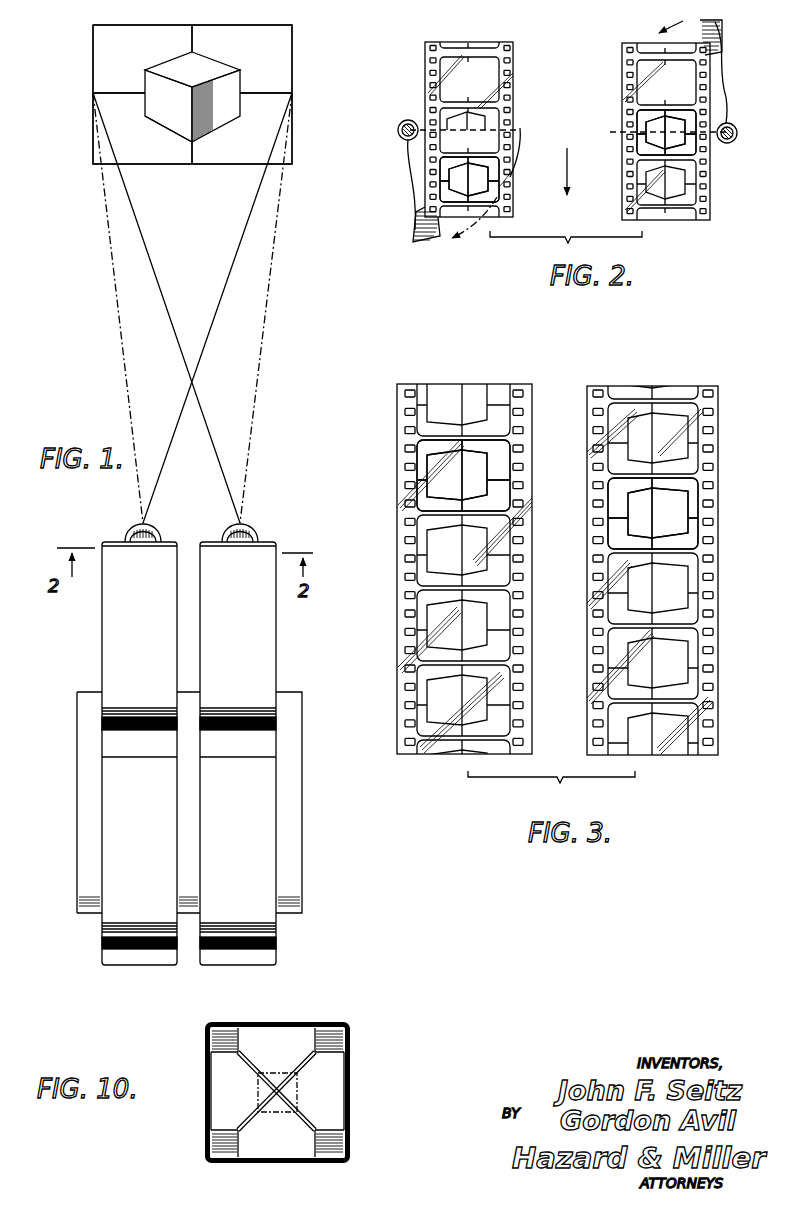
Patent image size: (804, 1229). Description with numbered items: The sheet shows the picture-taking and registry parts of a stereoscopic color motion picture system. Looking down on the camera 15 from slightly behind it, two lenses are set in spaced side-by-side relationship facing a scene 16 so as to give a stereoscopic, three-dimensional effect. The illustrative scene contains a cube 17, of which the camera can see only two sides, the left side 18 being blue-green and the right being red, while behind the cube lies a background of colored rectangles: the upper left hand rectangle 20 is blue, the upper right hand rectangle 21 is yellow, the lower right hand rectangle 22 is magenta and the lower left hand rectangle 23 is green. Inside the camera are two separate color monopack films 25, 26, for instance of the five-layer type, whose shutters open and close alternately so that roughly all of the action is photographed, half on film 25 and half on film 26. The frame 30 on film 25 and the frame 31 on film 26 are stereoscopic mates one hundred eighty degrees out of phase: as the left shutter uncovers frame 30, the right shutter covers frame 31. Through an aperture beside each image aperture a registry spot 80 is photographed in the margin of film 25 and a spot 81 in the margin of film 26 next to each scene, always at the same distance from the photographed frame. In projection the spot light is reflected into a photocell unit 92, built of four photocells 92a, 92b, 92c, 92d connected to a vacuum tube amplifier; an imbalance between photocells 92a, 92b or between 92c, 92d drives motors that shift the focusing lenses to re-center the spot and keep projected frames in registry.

In FIG. 1, the camera 15 is at (280, 647).
In FIG. 1, the scene 16 is at (294, 110).
In FIG. 1, the cube 17 is at (245, 80).
In FIG. 1, the left side of cube 18 is at (187, 130).
In FIG. 1, the upper left hand rectangle 20 is at (102, 73).
In FIG. 1, the upper right hand rectangle 21 is at (282, 48).
In FIG. 1, the lower right hand rectangle 22 is at (265, 132).
In FIG. 1, the lower left hand rectangle 23 is at (117, 147).
In FIG. 2, the color monopack film 25 is at (523, 91).
In FIG. 3, the color monopack film 25 is at (489, 382).
In FIG. 2, the color monopack film 26 is at (621, 62).
In FIG. 3, the color monopack film 26 is at (653, 385).
In FIG. 2, the frame 30 is at (495, 122).
In FIG. 3, the frame 30 is at (508, 481).
In FIG. 2, the frame 31 is at (643, 143).
In FIG. 3, the frame 31 is at (694, 500).
In FIG. 2, the spot 80 is at (430, 182).
In FIG. 3, the spot 80 is at (410, 476).
In FIG. 2, the spot 81 is at (704, 180).
In FIG. 3, the spot 81 is at (711, 441).
In FIG. 10, the photocell unit 92 is at (352, 1077).
In FIG. 10, the photocell 92a is at (222, 1077).
In FIG. 10, the photocell 92b is at (328, 1110).
In FIG. 10, the photocell 92c is at (300, 1037).
In FIG. 10, the photocell 92d is at (302, 1150).